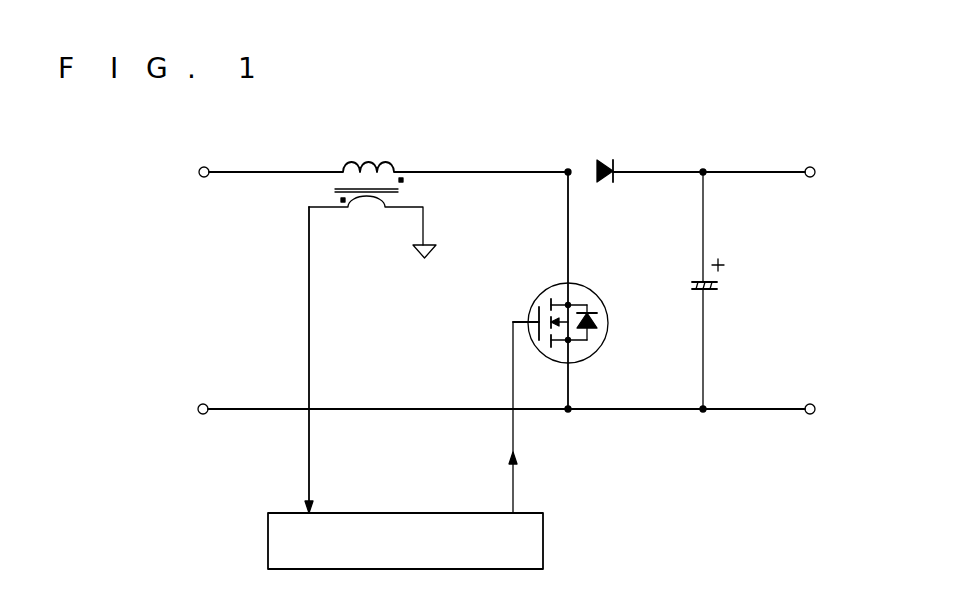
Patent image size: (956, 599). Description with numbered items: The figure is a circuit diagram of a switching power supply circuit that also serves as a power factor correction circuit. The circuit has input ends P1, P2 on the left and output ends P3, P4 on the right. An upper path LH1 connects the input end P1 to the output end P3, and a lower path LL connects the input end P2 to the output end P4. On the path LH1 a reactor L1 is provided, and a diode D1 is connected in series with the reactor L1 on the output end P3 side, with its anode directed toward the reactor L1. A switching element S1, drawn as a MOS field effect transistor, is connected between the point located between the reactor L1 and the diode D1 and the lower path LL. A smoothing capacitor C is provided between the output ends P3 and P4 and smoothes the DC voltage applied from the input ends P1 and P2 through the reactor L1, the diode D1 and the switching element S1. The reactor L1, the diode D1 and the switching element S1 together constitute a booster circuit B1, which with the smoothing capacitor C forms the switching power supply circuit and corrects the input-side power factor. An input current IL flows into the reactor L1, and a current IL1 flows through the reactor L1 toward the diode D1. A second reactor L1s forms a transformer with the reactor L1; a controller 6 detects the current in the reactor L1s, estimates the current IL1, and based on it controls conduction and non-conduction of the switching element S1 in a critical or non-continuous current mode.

The input end P1 is at (262, 188).
The input end P2 is at (203, 394).
The output end P3 is at (810, 155).
The output end P4 is at (810, 391).
The inductor current IL is at (250, 158).
The current IL1 is at (480, 158).
The reactor L1 is at (346, 161).
The reactor L1s is at (353, 215).
The diode D1 is at (601, 158).
The path LH1 is at (587, 193).
The switching element S1 is at (598, 290).
The smoothing capacitor C is at (723, 284).
The path LL is at (362, 406).
The booster circuit B1 is at (592, 427).
The controller 6 is at (543, 538).